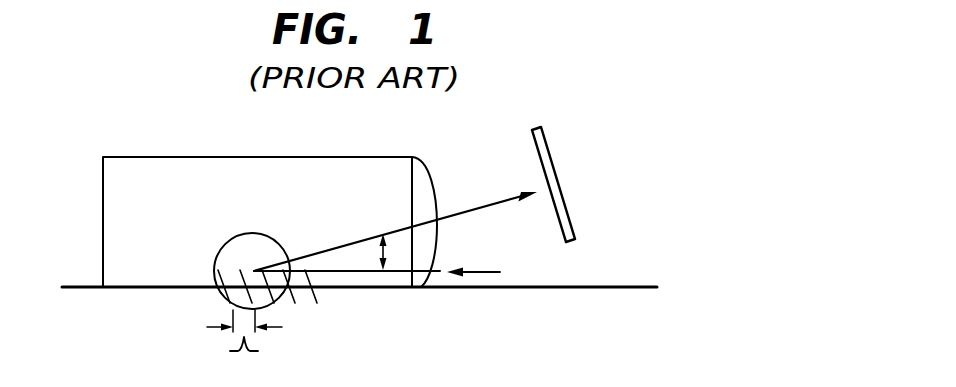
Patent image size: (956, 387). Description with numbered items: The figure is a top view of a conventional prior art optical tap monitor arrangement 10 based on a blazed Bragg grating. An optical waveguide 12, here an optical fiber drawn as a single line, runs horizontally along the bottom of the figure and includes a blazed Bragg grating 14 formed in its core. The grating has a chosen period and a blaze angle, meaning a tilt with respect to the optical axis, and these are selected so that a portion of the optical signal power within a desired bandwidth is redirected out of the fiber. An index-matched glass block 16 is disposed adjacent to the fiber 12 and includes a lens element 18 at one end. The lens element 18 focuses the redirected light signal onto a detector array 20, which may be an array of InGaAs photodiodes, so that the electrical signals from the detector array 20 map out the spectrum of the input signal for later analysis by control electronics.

The optical tap arrangement 10 is at (118, 102).
The optical waveguide 12 is at (600, 286).
The blazed Bragg grating 14 is at (317, 303).
The index-matched glass block 16 is at (200, 157).
The lens element 18 is at (433, 177).
The detector array 20 is at (547, 150).